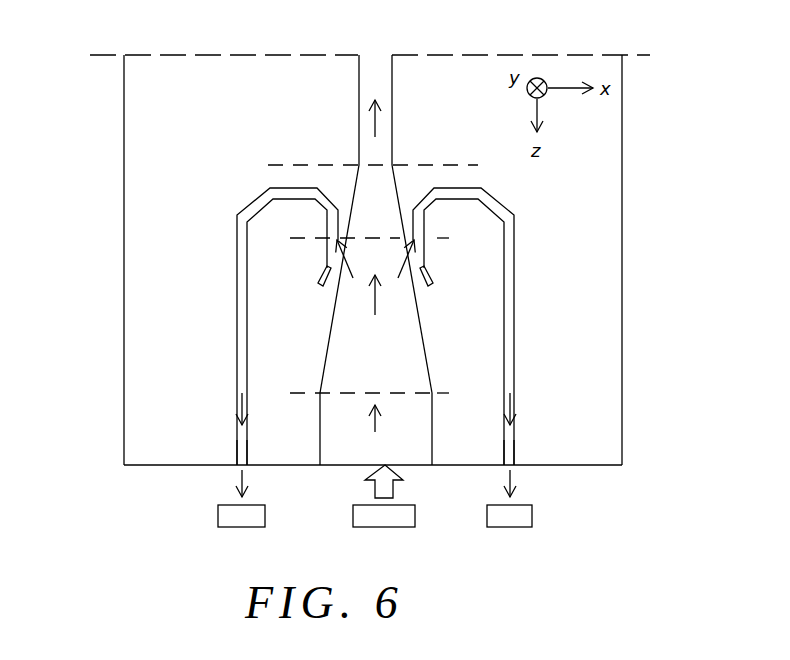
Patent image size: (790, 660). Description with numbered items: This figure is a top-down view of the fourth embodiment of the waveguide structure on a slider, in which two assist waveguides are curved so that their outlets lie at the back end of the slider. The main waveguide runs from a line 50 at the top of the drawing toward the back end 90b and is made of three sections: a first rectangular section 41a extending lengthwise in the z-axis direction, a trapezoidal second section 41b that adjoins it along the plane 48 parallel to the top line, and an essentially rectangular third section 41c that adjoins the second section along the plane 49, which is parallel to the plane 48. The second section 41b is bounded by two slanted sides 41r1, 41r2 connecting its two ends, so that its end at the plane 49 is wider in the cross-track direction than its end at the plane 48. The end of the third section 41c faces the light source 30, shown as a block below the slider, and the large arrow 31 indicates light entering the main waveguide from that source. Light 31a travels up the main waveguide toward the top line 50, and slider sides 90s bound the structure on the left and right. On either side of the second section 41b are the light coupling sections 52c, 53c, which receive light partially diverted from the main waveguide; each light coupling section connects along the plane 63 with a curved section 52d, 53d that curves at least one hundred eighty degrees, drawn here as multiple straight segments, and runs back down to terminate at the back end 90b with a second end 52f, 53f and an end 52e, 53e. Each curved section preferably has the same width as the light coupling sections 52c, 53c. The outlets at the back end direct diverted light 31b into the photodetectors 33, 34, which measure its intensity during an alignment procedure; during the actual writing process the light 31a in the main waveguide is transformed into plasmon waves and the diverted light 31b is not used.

The inlet plane / upstream boundary line 50 is at (369, 56).
The first rectangular section 41a is at (377, 62).
The light 31a is at (375, 130).
The plane 48 is at (373, 166).
The plane 63 is at (372, 236).
The light coupling section 52c is at (322, 265).
The second end 52f is at (316, 279).
The light coupling section 53c is at (429, 265).
The second end 53f is at (435, 279).
The side 41r1 is at (333, 318).
The second section 41b is at (373, 279).
The side 41r2 is at (430, 355).
The curved section 52d is at (237, 362).
The curved section 53d is at (515, 358).
The plane 49 is at (373, 395).
The diverted light 31b is at (238, 412).
The third section 41c is at (322, 438).
The slider sides 90s is at (124, 300).
The back end 90b is at (142, 470).
The end 52e is at (241, 470).
The end 53e is at (507, 470).
The gas supplied 31 is at (375, 498).
The photodetector 33 is at (266, 516).
The light source 30 is at (416, 516).
The photodetector 34 is at (533, 516).